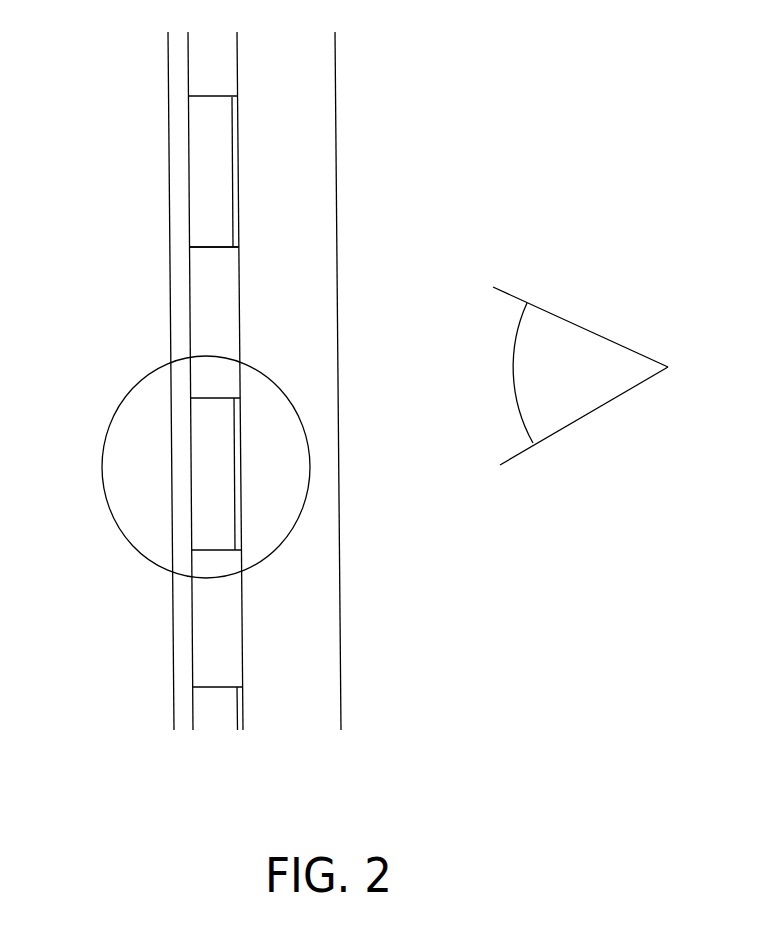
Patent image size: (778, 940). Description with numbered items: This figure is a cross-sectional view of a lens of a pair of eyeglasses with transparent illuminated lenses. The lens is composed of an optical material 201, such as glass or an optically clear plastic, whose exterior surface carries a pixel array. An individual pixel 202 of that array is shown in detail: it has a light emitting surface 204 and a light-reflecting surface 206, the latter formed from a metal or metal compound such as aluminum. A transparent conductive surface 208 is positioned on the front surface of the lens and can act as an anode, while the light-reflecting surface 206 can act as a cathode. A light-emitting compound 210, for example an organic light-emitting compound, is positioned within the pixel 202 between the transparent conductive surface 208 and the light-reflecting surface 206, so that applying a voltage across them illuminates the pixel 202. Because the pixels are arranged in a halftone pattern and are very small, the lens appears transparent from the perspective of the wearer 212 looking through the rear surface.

The optical material 201 is at (308, 95).
The pixel 202 is at (103, 495).
The light emitting surface 204 is at (188, 123).
The light-reflecting surface 206 is at (238, 192).
The transparent conductive surface 208 is at (177, 200).
The light-emitting compound 210 is at (207, 220).
The wearer 212 is at (580, 376).